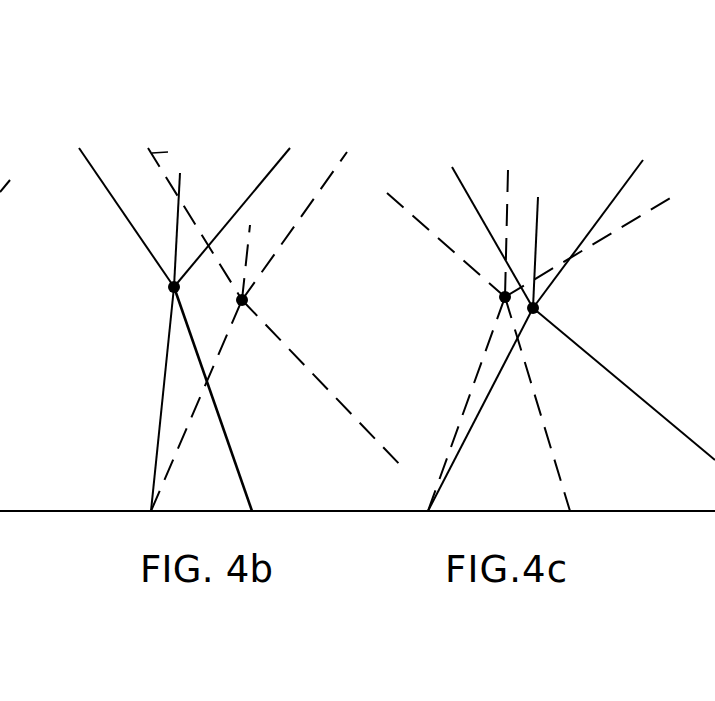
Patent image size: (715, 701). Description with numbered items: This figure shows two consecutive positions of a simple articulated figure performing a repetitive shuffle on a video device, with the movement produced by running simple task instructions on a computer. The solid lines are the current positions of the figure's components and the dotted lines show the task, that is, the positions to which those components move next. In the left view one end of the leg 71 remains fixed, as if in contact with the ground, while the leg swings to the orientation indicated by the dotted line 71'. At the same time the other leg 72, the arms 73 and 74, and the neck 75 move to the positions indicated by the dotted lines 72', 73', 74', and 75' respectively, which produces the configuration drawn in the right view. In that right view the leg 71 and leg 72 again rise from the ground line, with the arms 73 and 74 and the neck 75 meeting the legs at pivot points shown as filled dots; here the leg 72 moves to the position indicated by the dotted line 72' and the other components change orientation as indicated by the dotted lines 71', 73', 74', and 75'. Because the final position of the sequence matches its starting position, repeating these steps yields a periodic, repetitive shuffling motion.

In FIG. 4B, the leg 71 is at (137, 399).
In FIG. 4C, the leg 71 is at (480, 409).
In FIG. 4B, the dotted line indicating position of leg 71' is at (167, 405).
In FIG. 4C, the dotted line indicating position of leg 71' is at (480, 404).
In FIG. 4B, the leg 72 is at (234, 399).
In FIG. 4C, the leg 72 is at (624, 384).
In FIG. 4B, the dotted line indicating position of leg 72' is at (323, 385).
In FIG. 4C, the dotted line indicating position of leg 72' is at (569, 404).
In FIG. 4B, the arm 73 is at (119, 217).
In FIG. 4C, the arm 73 is at (492, 218).
In FIG. 4B, the dotted line indicating position of arm 73' is at (195, 195).
In FIG. 4C, the dotted line indicating position of arm 73' is at (446, 199).
In FIG. 4B, the arm 74 is at (232, 207).
In FIG. 4C, the arm 74 is at (588, 217).
In FIG. 4B, the dotted line indicating position of arm 74' is at (296, 199).
In FIG. 4C, the dotted line indicating position of arm 74' is at (602, 231).
In FIG. 4B, the neck 75 is at (141, 207).
In FIG. 4C, the neck 75 is at (559, 237).
In FIG. 4B, the dotted line indicating position of neck 75' is at (299, 262).
In FIG. 4C, the dotted line indicating position of neck 75' is at (532, 194).